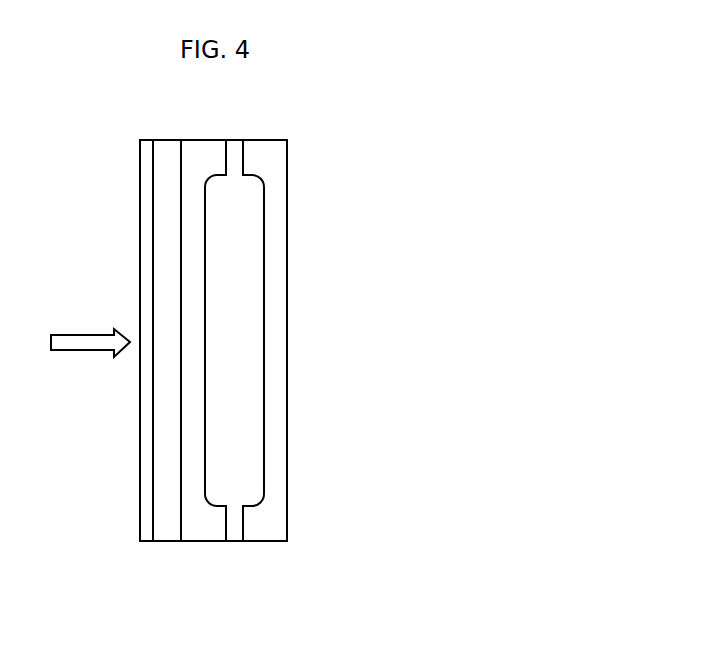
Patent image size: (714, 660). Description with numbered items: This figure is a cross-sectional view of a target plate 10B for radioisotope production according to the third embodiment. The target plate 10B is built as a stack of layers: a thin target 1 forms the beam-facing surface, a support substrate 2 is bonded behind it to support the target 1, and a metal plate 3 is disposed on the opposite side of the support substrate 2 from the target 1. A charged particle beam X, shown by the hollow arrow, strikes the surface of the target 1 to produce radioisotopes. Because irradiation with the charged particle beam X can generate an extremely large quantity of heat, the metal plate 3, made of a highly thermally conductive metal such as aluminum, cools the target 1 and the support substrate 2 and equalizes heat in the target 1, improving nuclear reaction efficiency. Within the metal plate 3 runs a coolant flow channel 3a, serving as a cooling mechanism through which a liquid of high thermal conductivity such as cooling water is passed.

The target plate for radioisotope production 10B is at (324, 136).
The target 1 is at (147, 150).
The support substrate 2 is at (173, 150).
The metal plate 3 is at (272, 150).
The coolant flow channel 3a is at (262, 279).
The charged particle beam X is at (90, 332).